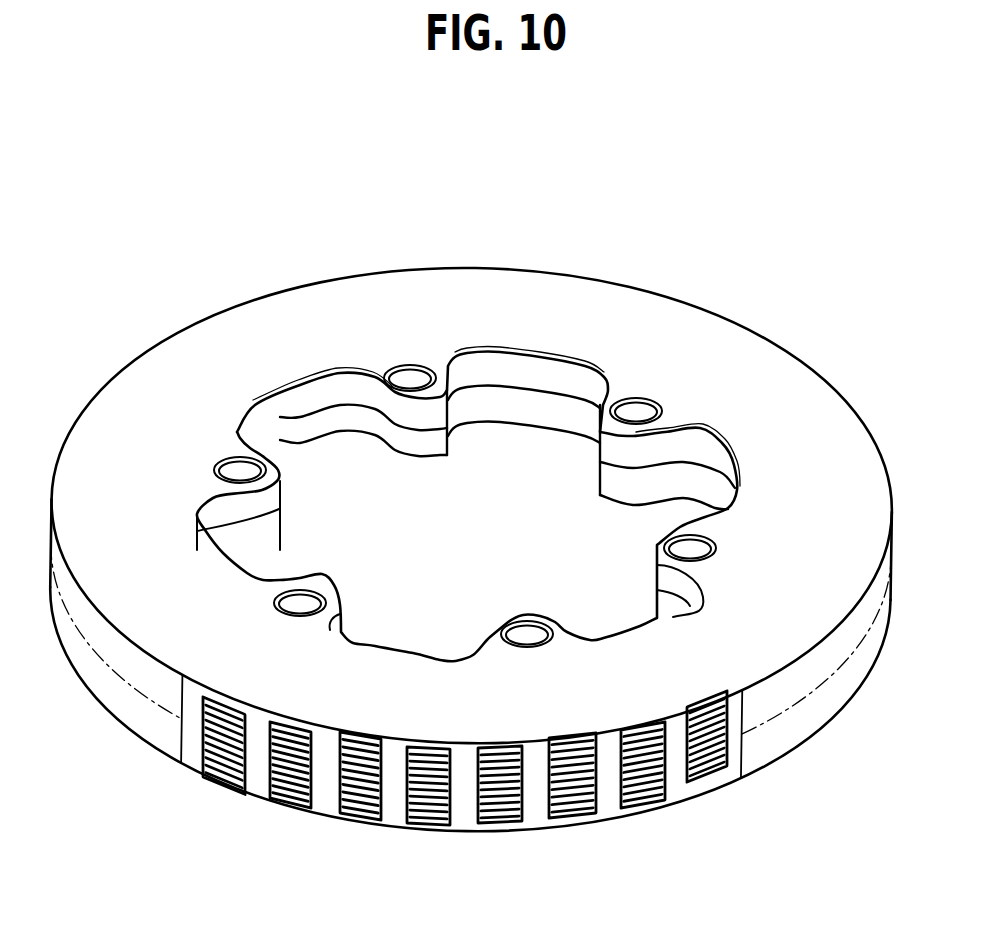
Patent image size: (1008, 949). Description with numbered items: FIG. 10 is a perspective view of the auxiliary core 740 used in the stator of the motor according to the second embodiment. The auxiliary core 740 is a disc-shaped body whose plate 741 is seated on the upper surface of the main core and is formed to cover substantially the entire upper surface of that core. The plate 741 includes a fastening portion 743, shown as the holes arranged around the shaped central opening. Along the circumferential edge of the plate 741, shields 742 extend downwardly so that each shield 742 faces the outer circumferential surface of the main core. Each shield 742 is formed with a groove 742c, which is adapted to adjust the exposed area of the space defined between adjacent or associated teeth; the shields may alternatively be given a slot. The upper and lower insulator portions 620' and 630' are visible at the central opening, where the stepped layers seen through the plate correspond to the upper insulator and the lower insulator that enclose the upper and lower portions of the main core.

The auxiliary core 740 is at (713, 352).
The plate 741 is at (560, 313).
The shield 742 is at (736, 760).
The groove 742c is at (581, 780).
The fastening portion 743 is at (519, 618).
The upper layer 620' is at (468, 504).
The lower layer 630' is at (507, 465).